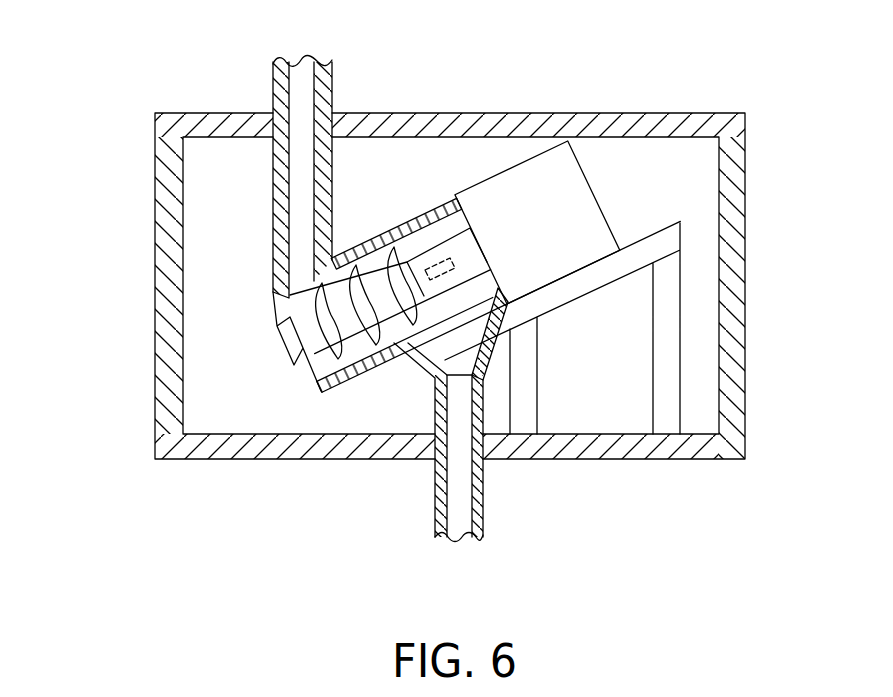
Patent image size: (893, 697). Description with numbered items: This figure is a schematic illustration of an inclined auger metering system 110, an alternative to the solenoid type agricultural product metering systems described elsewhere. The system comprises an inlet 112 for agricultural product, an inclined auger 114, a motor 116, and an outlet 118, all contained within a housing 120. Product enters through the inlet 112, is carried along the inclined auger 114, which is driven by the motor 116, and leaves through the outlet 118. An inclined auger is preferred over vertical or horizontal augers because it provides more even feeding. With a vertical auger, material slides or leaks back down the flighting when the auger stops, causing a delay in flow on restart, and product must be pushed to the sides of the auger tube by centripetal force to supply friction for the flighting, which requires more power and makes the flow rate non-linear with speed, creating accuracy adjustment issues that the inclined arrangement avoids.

The inclined auger metering system 110 is at (132, 312).
The inlet 112 is at (332, 80).
The inclined auger 114 is at (342, 378).
The motor 116 is at (590, 180).
The outlet 118 is at (435, 512).
The housing 120 is at (747, 279).